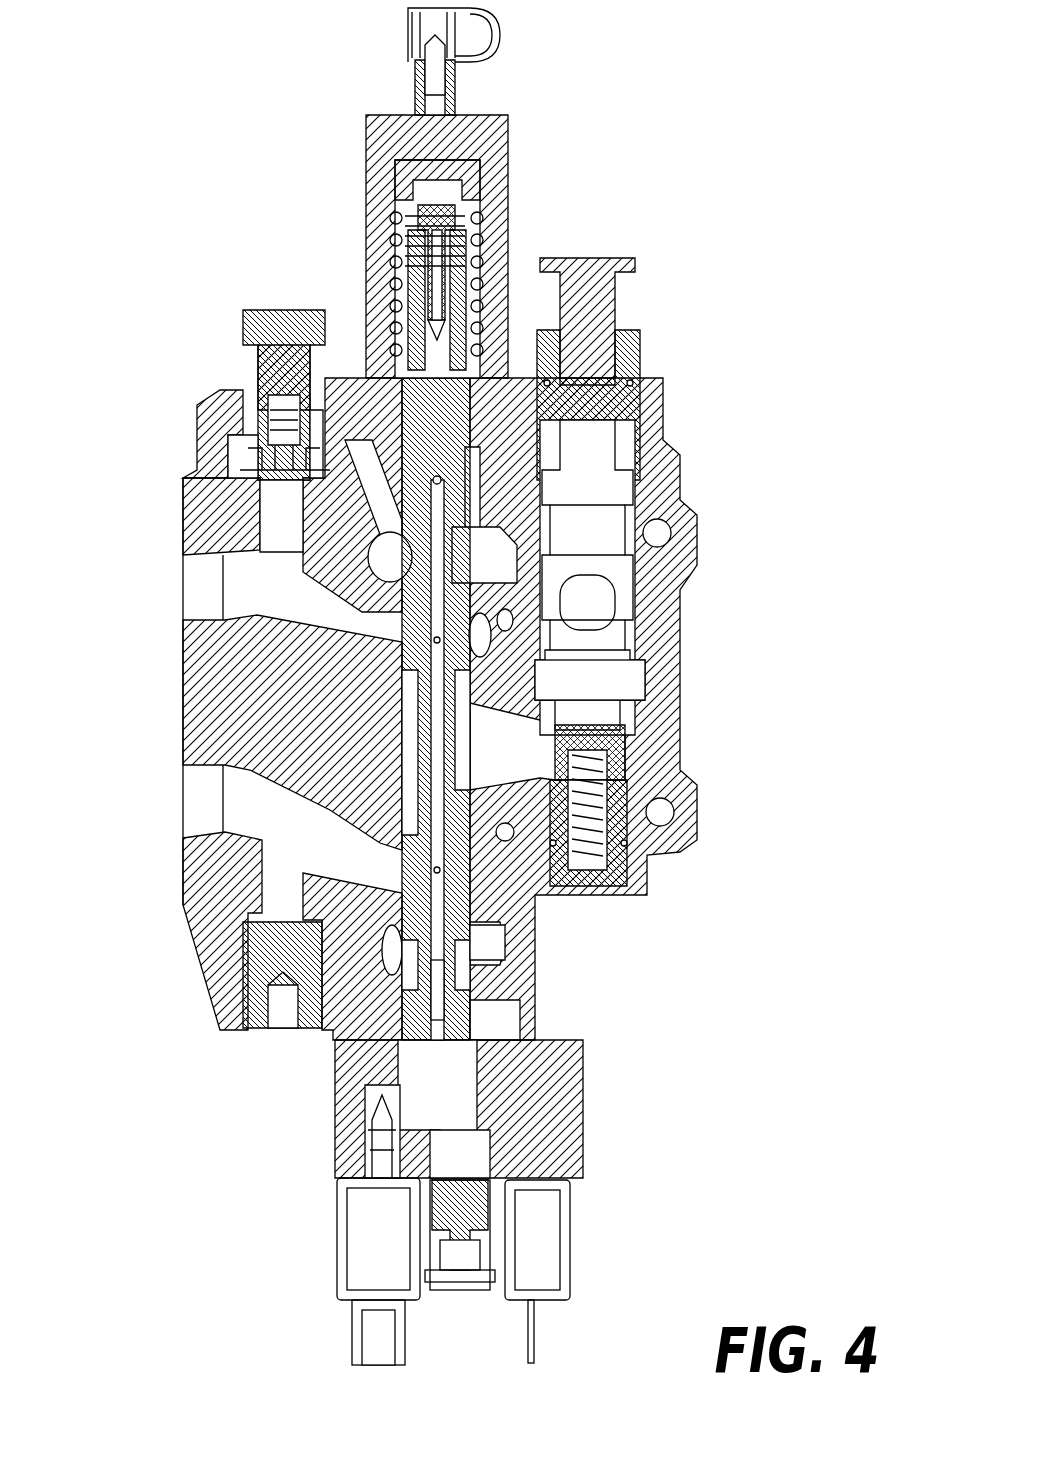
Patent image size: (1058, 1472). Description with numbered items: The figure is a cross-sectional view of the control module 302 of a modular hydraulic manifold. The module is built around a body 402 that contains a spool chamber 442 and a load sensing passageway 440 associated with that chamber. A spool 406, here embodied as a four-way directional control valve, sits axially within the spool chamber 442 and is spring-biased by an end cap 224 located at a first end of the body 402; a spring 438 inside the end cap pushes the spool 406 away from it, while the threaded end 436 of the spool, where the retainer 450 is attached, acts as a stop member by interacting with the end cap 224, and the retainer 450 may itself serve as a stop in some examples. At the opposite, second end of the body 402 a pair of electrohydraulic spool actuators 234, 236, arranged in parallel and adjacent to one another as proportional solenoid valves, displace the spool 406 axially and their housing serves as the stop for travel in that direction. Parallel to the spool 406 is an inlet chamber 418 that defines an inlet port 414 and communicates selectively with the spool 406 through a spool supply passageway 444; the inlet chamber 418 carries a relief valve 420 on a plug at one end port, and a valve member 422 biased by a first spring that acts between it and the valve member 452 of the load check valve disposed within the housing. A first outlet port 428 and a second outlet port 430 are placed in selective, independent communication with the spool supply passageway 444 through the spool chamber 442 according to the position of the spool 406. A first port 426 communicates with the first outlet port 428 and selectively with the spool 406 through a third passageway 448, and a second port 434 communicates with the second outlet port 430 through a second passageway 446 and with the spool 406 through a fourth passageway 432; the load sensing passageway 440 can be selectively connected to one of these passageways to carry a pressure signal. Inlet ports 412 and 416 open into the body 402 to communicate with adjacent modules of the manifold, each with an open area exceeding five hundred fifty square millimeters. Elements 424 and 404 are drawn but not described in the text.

The control module 302 is at (806, 84).
The end cap 224 is at (490, 130).
The retainer 450 is at (462, 222).
The threaded end of the spool 436 is at (430, 214).
The spring 438 is at (400, 238).
The relief valve 420 is at (620, 298).
The second port 434 is at (275, 357).
The second passageway 446 is at (280, 495).
The fourth passageway 432 is at (360, 510).
The inlet port 416 is at (260, 545).
The second outlet port 430 is at (210, 585).
The inlet port 414 is at (615, 583).
The inlet chamber 418 is at (625, 680).
The spool supply passageway 444 is at (520, 752).
The body 402 is at (690, 795).
The first outlet port 428 is at (213, 795).
The valve member 452 is at (625, 812).
The valve member 422 is at (622, 870).
The first port 426 is at (283, 887).
The spool 406 is at (462, 878).
The spool chamber 442 is at (400, 970).
The inlet port 412 is at (500, 942).
The lower port 424 is at (235, 975).
The load sensing passageway 440 is at (440, 1000).
The spool bore 404 is at (455, 1015).
The third passageway 448 is at (295, 1005).
The electrohydraulic spool actuator 234 is at (360, 1225).
The electrohydraulic spool actuator 236 is at (532, 1212).